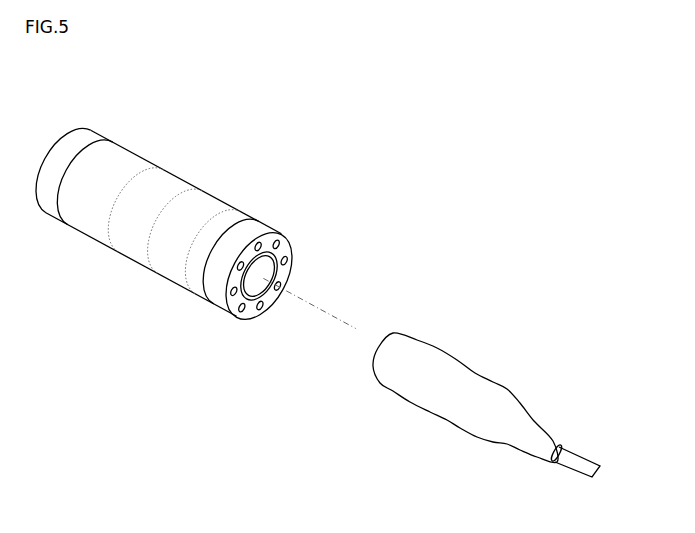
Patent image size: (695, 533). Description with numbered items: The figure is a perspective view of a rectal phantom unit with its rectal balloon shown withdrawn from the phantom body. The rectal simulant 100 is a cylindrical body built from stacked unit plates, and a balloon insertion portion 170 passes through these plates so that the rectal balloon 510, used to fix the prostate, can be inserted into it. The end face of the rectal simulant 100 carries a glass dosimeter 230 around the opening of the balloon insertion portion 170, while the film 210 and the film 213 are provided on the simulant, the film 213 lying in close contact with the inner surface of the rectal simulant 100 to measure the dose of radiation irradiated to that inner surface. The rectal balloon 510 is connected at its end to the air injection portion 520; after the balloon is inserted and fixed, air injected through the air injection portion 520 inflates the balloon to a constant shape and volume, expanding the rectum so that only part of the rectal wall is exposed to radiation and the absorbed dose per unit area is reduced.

The rectal simulant 100 is at (196, 216).
The film 210 is at (171, 193).
The film 213 is at (238, 312).
The glass dosimeter 230 is at (260, 310).
The balloon insertion portion 170 is at (265, 268).
The rectal balloon 510 is at (433, 360).
The air injection portion 520 is at (568, 460).